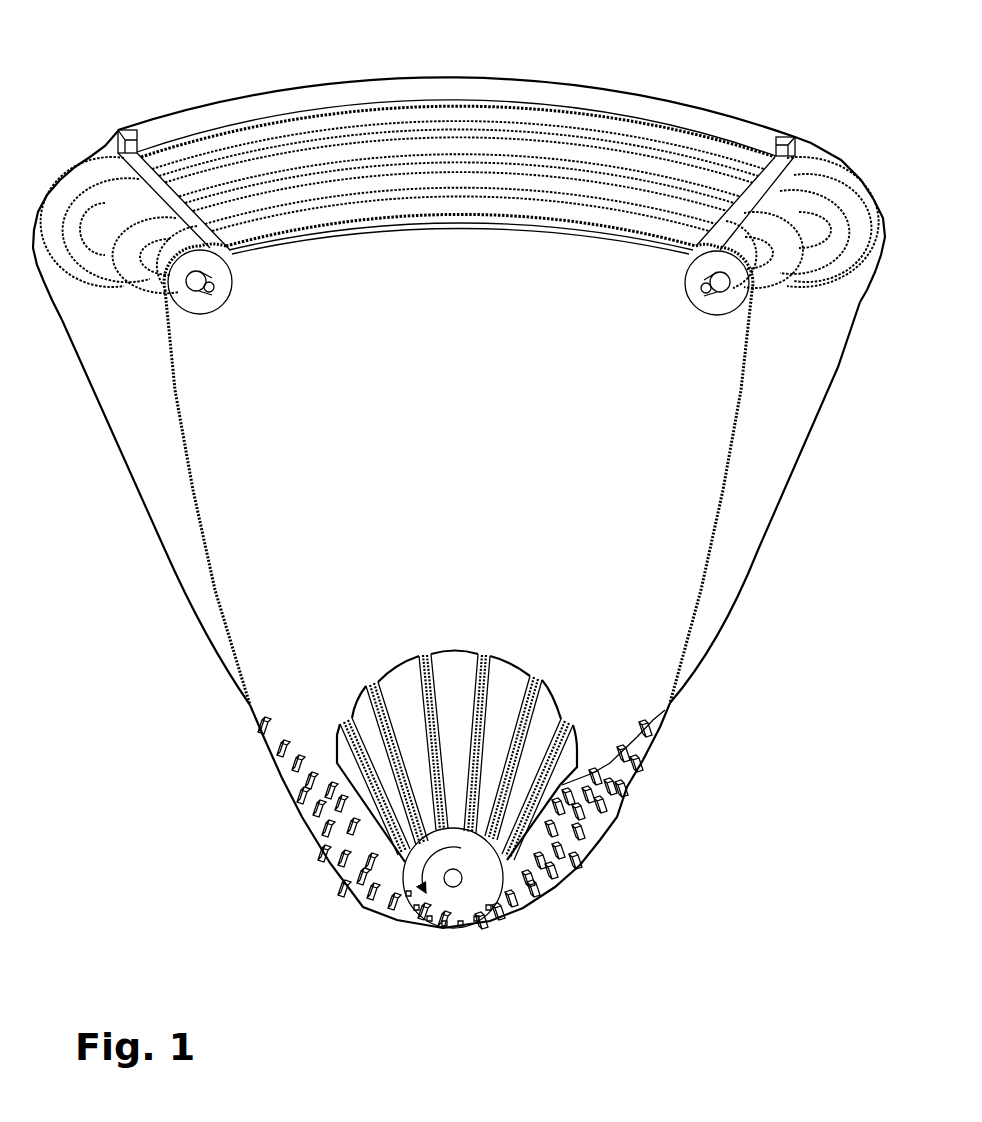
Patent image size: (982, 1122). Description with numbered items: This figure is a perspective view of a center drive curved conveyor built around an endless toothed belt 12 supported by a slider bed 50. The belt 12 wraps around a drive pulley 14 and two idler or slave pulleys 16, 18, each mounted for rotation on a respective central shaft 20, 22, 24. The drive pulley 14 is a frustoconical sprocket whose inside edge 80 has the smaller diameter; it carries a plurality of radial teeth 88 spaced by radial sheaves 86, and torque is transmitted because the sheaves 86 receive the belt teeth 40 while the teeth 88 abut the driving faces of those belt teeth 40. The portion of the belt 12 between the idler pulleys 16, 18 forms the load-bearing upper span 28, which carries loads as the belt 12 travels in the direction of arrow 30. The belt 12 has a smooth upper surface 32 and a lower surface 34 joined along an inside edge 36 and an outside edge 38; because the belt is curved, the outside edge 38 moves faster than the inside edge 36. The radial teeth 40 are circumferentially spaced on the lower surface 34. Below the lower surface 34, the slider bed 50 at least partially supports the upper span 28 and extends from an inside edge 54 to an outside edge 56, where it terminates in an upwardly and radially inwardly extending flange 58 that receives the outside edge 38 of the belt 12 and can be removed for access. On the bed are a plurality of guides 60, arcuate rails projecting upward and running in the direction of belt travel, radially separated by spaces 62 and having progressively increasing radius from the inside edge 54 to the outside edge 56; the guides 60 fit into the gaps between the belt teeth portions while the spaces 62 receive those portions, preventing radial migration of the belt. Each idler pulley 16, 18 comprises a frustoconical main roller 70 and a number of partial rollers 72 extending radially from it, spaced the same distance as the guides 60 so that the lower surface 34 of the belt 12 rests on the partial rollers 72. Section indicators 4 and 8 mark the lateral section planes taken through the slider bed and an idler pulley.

The section line 4- 4 is at (372, 73).
The section line 8- 8 is at (877, 188).
The endless toothed belt 12 is at (105, 150).
The drive pulley 14 is at (462, 784).
The idler pulley 16 is at (683, 271).
The idler pulley 18 is at (234, 283).
The central shaft 20 is at (453, 888).
The central shaft 22 is at (699, 295).
The central shaft 24 is at (213, 293).
The upper span 28 is at (793, 168).
The arrow 30 is at (393, 912).
The upper surface 32 is at (137, 393).
The lower surface 34 is at (461, 833).
The inside edge 36 is at (738, 390).
The outside edge 38 is at (476, 503).
The radial teeth 40 is at (595, 843).
The slider bed 50 is at (277, 92).
The inside edge 54 is at (546, 230).
The outside edge 56 is at (800, 147).
The flange 58 is at (674, 115).
The guide 60 is at (543, 157).
The spaces 62 is at (498, 177).
The main roller 70 is at (216, 288).
The partial rollers 72 is at (207, 303).
The inside edge 80 is at (483, 895).
The radial sheaves 86 is at (488, 655).
The radial teeth 88 is at (455, 668).